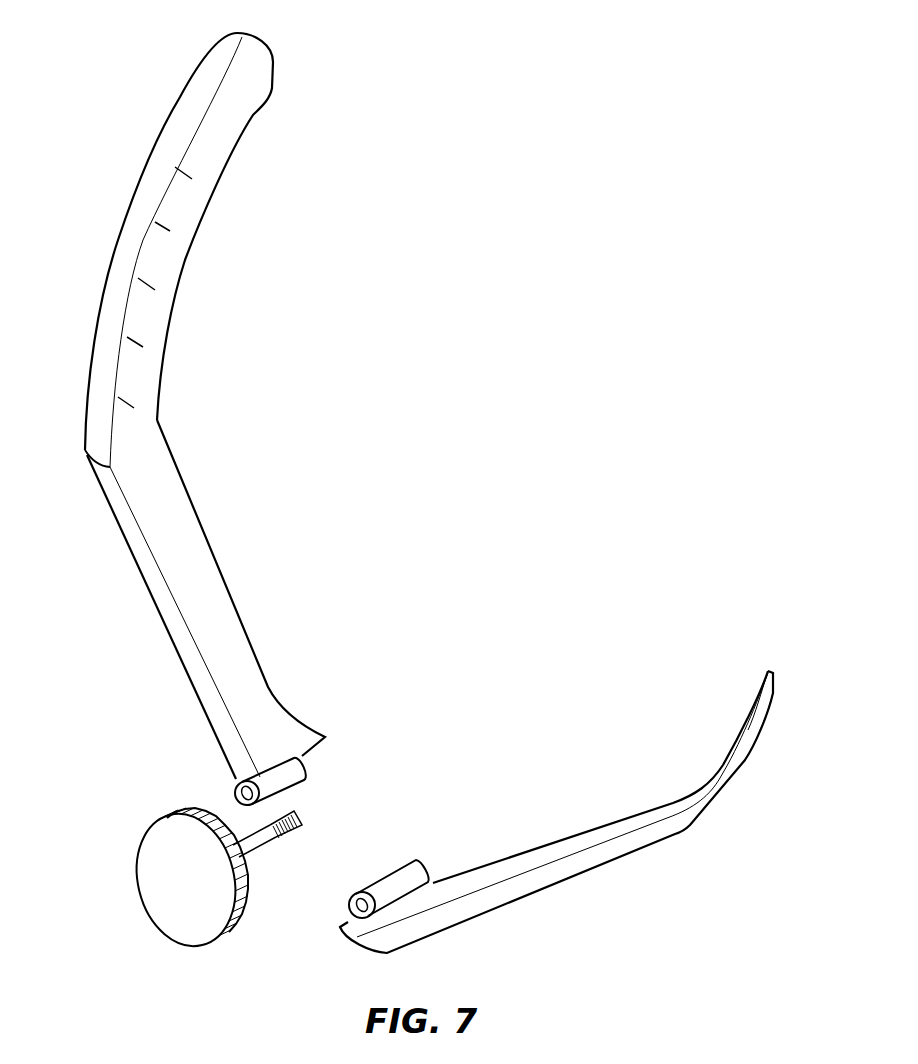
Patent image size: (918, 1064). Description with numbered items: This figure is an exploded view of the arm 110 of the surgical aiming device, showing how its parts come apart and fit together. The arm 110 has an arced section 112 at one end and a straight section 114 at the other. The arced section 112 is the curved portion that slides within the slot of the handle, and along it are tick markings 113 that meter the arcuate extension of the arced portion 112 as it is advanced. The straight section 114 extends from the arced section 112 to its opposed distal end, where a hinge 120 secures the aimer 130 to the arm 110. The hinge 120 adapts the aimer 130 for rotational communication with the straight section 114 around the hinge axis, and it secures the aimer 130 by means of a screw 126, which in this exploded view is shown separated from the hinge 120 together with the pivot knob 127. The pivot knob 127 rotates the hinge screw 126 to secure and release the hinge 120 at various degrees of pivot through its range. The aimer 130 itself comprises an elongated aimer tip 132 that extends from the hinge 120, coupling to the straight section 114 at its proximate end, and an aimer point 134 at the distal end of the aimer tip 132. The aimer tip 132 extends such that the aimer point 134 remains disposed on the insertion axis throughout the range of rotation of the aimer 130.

The arm 110 is at (82, 450).
The arced section 112 is at (168, 100).
The tick markings 113 is at (168, 348).
The straight section 114 is at (205, 537).
The hinge 120 is at (293, 792).
The screw 126 is at (243, 840).
The pivot knob 127 is at (185, 918).
The aimer 130 is at (667, 833).
The aimer tip 132 is at (535, 857).
The aimer point 134 is at (768, 670).